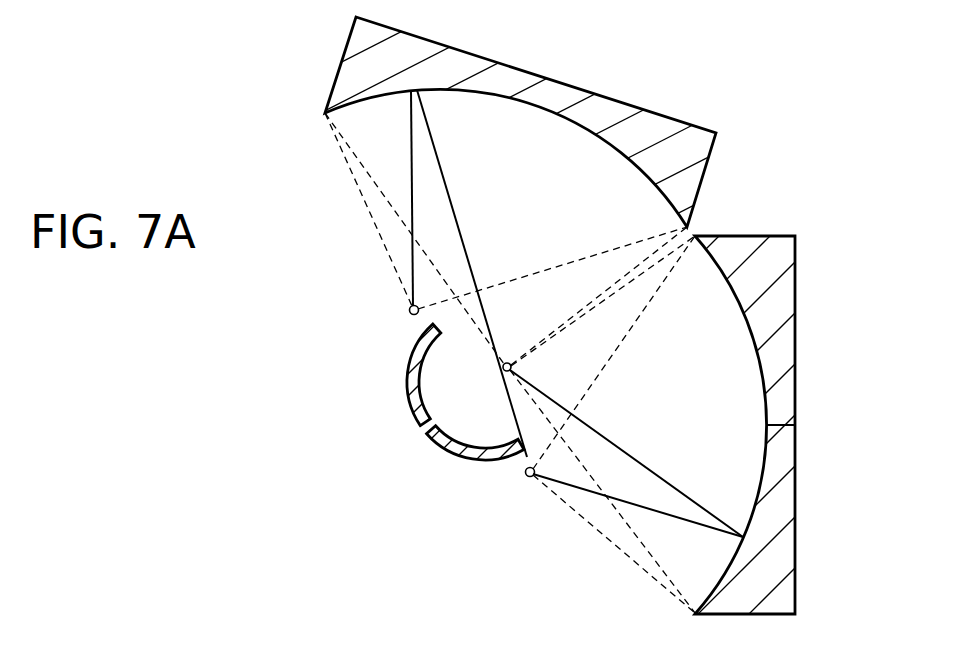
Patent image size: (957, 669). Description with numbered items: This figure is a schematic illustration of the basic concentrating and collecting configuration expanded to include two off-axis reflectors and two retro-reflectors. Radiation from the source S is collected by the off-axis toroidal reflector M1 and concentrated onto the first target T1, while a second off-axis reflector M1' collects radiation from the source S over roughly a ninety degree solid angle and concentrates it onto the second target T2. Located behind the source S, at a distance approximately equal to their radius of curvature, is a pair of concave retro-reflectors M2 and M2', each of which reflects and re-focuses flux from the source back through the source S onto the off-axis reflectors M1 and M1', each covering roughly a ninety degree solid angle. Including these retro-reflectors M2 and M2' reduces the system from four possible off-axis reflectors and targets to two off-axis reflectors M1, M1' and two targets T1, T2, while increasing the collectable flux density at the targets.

The toroidal reflector M1 is at (606, 434).
The second off-axis reflector M1' is at (380, 334).
The retro-reflector M2 is at (436, 390).
The second retro-reflector M2' is at (546, 392).
The source S is at (526, 369).
The first target T1 is at (520, 502).
The second target T2 is at (396, 315).